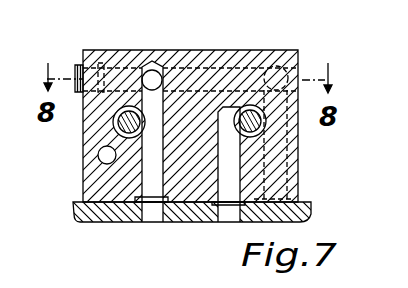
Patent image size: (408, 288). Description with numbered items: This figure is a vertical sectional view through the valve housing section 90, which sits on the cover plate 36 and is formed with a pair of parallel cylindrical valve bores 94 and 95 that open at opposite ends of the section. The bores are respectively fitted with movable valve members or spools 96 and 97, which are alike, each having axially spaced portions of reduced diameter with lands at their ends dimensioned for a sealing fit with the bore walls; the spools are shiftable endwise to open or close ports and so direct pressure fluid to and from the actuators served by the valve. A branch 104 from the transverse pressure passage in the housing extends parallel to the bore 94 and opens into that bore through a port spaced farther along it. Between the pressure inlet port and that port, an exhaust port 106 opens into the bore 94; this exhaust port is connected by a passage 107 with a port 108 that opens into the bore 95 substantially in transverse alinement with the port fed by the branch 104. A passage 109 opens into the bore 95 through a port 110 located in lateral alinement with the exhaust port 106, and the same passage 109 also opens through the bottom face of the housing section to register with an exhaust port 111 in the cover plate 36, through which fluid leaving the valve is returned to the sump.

The cover plate 36 is at (300, 217).
The housing section 90 is at (90, 184).
The valve bore 94 is at (130, 106).
The valve bore 95 is at (252, 105).
The valve spool 96 is at (118, 127).
The valve spool 97 is at (261, 126).
The branch passage 104 is at (103, 156).
The exhaust port 106 is at (160, 176).
The passage 107 is at (194, 68).
The port 108 is at (290, 174).
The passage 109 is at (212, 204).
The port 110 is at (238, 114).
The exhaust port 111 is at (222, 177).